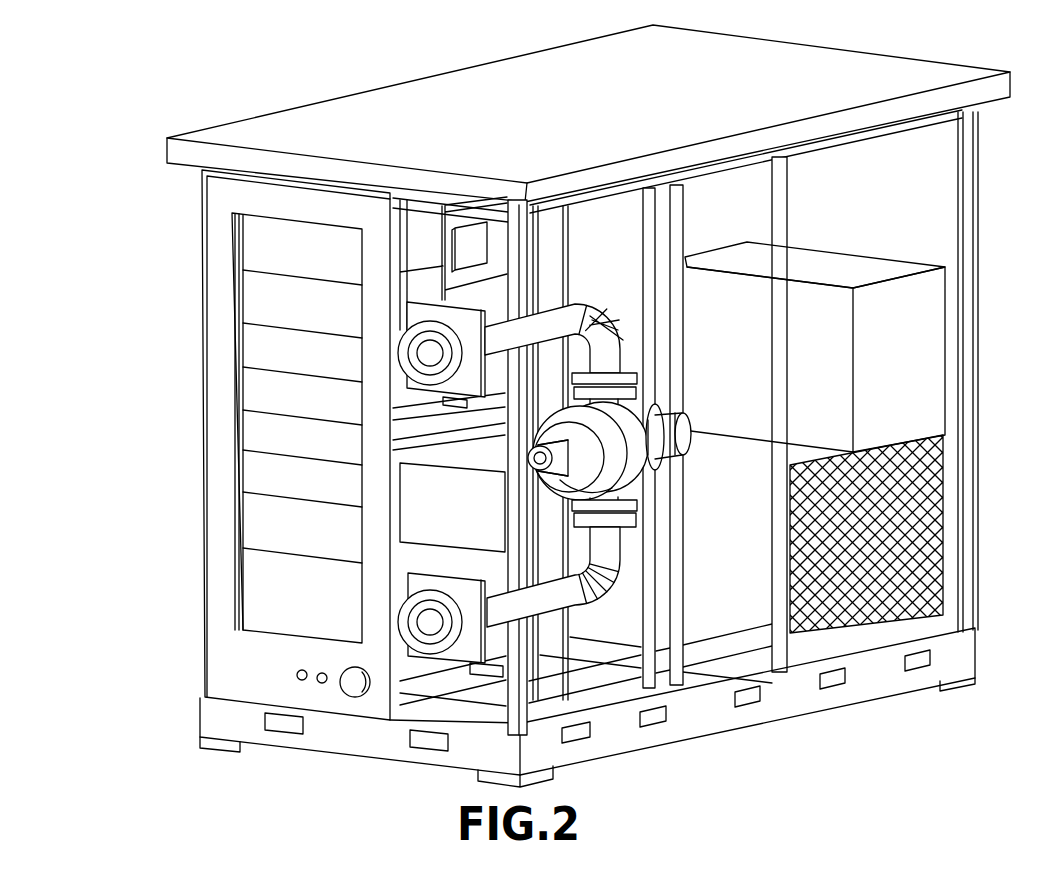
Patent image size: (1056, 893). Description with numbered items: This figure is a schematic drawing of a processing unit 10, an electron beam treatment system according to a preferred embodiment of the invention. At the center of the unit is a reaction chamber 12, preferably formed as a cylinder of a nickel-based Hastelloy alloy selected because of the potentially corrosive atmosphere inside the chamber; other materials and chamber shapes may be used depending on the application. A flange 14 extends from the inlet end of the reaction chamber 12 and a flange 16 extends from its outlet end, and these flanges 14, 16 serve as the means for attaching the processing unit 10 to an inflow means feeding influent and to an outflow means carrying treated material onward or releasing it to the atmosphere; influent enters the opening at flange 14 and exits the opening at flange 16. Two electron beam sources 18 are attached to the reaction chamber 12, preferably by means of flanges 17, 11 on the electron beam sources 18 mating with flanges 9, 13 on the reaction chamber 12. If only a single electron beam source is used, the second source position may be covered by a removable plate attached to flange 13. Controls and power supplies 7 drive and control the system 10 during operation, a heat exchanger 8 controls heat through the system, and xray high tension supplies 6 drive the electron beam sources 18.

The xray high tension supplies 6 is at (470, 222).
The controls and power supplies 7 is at (292, 307).
The heat exchanger 8 is at (912, 383).
The flange 9 is at (668, 443).
The processing unit 10 is at (1028, 268).
The flange 11 is at (630, 462).
The reaction chamber 12 is at (632, 430).
The flange 13 is at (660, 432).
The flange 14 is at (417, 350).
The flange 16 is at (413, 624).
The flange 17 is at (610, 475).
The electron beam sources 18 is at (685, 427).